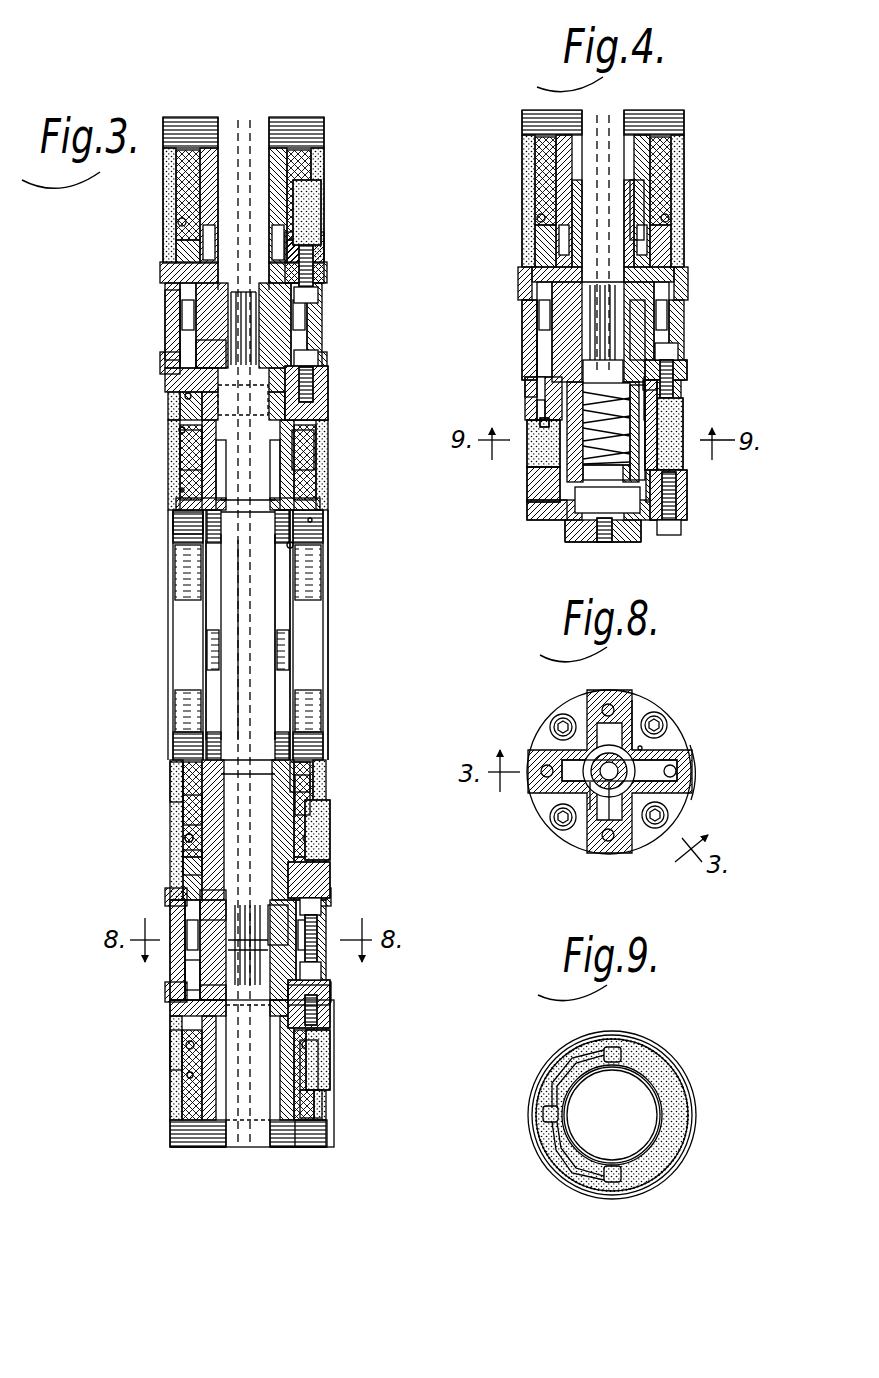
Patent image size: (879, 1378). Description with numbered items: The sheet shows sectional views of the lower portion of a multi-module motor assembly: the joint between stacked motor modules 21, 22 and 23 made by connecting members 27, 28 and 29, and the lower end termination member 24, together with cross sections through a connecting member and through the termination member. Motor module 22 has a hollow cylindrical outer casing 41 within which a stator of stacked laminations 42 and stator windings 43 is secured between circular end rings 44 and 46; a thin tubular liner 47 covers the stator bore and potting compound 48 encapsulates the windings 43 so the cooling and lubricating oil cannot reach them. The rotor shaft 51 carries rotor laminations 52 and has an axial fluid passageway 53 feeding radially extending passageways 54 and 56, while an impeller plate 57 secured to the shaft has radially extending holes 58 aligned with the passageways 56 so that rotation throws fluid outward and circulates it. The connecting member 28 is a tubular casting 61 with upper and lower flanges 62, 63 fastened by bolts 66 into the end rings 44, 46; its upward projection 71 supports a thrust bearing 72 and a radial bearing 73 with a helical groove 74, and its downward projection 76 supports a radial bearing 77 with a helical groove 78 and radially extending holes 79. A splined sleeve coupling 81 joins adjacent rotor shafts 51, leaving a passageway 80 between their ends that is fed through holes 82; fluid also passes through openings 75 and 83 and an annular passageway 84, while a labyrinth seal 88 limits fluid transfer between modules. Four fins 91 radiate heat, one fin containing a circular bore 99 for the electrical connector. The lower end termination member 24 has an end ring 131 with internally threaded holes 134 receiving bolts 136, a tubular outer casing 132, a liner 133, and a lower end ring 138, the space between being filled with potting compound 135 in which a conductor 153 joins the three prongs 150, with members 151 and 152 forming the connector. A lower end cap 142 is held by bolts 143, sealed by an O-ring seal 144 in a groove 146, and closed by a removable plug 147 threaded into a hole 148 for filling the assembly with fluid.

In FIG. 3, the motor module 21 is at (165, 192).
In FIG. 3, the motor module 22 is at (165, 646).
In FIG. 3, the motor module 23 is at (170, 1106).
In FIG. 4, the motor module 23 is at (522, 160).
In FIG. 4, the lower end termination member 24 is at (527, 476).
In FIG. 9, the lower end termination member 24 is at (546, 1060).
In FIG. 3, the connecting member 27 is at (160, 322).
In FIG. 3, the connecting member 28 is at (172, 916).
In FIG. 8, the connecting member 28 is at (547, 708).
In FIG. 4, the connecting member 29 is at (520, 320).
In FIG. 3, the outer casing 41 is at (328, 588).
In FIG. 3, the laminations 42 is at (312, 612).
In FIG. 3, the stator windings 43 is at (300, 778).
In FIG. 3, the end ring 44 is at (312, 420).
In FIG. 3, the end ring 46 is at (312, 243).
In FIG. 3, the tubular liner 47 is at (292, 545).
In FIG. 3, the potting compound 48 is at (302, 215).
In FIG. 3, the rotor shaft 51 is at (268, 668).
In FIG. 8, the rotor shaft 51 is at (578, 795).
In FIG. 3, the rotor laminations 52 is at (215, 565).
In FIG. 3, the fluid passageway 53 is at (242, 592).
In FIG. 8, the fluid passageway 53 is at (645, 746).
In FIG. 3, the radially extending passageways 54 is at (290, 372).
In FIG. 3, the radially extending fluid passageways 56 is at (305, 522).
In FIG. 3, the impeller plate 57 is at (190, 540).
In FIG. 3, the radially extending holes 58 is at (170, 490).
In FIG. 3, the tubular casting 61 is at (298, 920).
In FIG. 8, the tubular casting 61 is at (636, 720).
In FIG. 3, the upper flange 62 is at (310, 900).
In FIG. 3, the lower flange 63 is at (330, 992).
In FIG. 8, the lower flange 63 is at (692, 740).
In FIG. 3, the bolts 66 is at (322, 915).
In FIG. 8, the bolts 66 is at (552, 722).
In FIG. 3, the projection 71 is at (315, 792).
In FIG. 3, the thrust bearing 72 is at (176, 786).
In FIG. 3, the radial bearing 73 is at (178, 812).
In FIG. 3, the helical groove 74 is at (180, 834).
In FIG. 3, the openings 75 is at (185, 396).
In FIG. 3, the projection 76 is at (305, 458).
In FIG. 3, the radial bearing 77 is at (178, 1062).
In FIG. 4, the radial bearing 77 is at (642, 232).
In FIG. 3, the helical groove 78 is at (178, 432).
In FIG. 3, the radially extending holes 79 is at (172, 457).
In FIG. 3, the passageway 80 is at (252, 955).
In FIG. 3, the sleeve coupling 81 is at (198, 970).
In FIG. 4, the sleeve coupling 81 is at (650, 308).
In FIG. 8, the sleeve coupling 81 is at (578, 800).
In FIG. 3, the radially extending holes 82 is at (270, 940).
In FIG. 8, the radially extending holes 82 is at (633, 795).
In FIG. 3, the openings 83 is at (192, 860).
In FIG. 3, the annular passageway 84 is at (212, 906).
In FIG. 8, the annular passageway 84 is at (678, 770).
In FIG. 3, the labyrinth seal 88 is at (185, 356).
In FIG. 8, the fins 91 is at (620, 692).
In FIG. 8, the circular bore 99 is at (590, 692).
In FIG. 4, the end ring 131 is at (682, 406).
In FIG. 4, the tubular outer casing 132 is at (690, 455).
In FIG. 9, the tubular outer casing 132 is at (660, 1072).
In FIG. 4, the liner 133 is at (607, 448).
In FIG. 9, the liner 133 is at (660, 1100).
In FIG. 4, the internally threaded holes 134 is at (667, 386).
In FIG. 4, the potting compound 135 is at (692, 412).
In FIG. 9, the potting compound 135 is at (680, 1116).
In FIG. 4, the bolts 136 is at (676, 345).
In FIG. 4, the lower end ring 138 is at (682, 476).
In FIG. 4, the lower end cap 142 is at (657, 540).
In FIG. 4, the bolts 143 is at (682, 527).
In FIG. 4, the O-ring seal 144 is at (548, 522).
In FIG. 4, the groove 146 is at (636, 545).
In FIG. 4, the removable plug 147 is at (604, 546).
In FIG. 4, the hole 148 is at (600, 545).
In FIG. 4, the prongs 150 is at (527, 397).
In FIG. 9, the prongs 150 is at (622, 1050).
In FIG. 4, the members 151 is at (527, 382).
In FIG. 4, the members 152 is at (540, 422).
In FIG. 9, the conductor 153 is at (562, 1168).